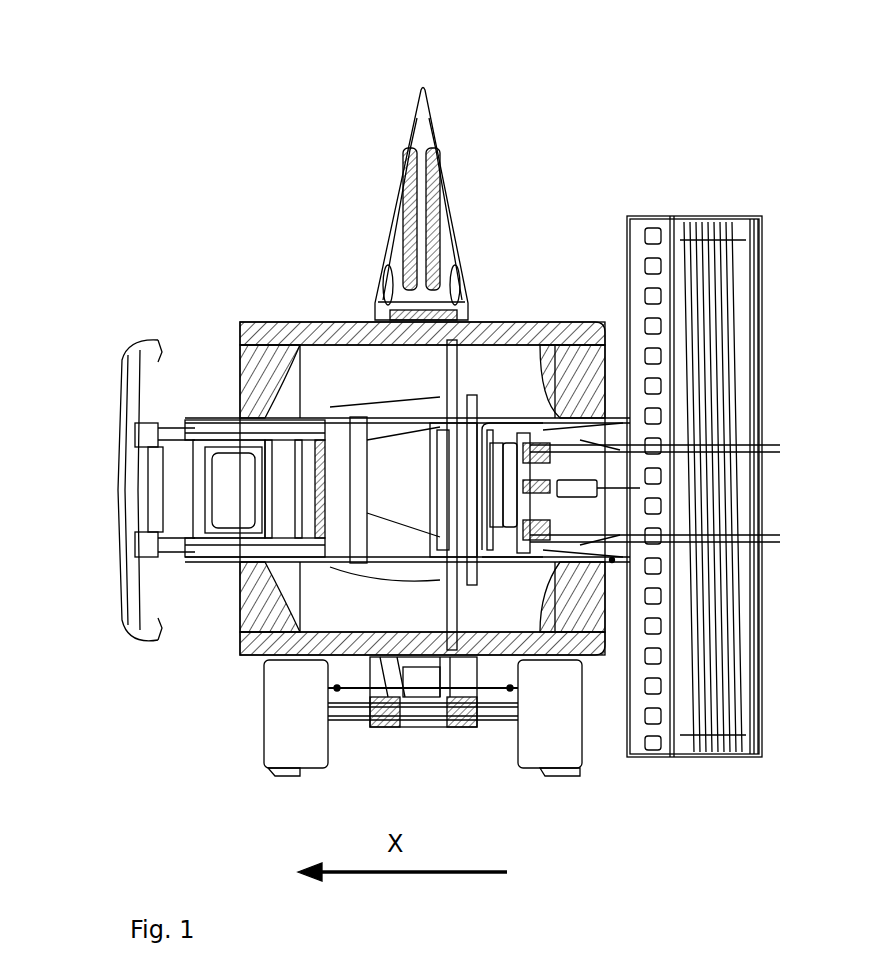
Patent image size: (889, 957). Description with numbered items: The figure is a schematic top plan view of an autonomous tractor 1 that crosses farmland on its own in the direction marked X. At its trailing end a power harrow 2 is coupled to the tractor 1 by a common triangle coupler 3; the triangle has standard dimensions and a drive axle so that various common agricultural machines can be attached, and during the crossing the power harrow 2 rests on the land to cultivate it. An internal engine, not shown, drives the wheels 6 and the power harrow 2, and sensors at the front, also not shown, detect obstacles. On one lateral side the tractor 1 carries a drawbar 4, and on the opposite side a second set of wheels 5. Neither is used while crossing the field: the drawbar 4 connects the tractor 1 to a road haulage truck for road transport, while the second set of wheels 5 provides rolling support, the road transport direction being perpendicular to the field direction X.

The autonomous tractor 1 is at (250, 560).
The power harrow 2 is at (668, 292).
The triangle coupler 3 is at (612, 560).
The drawbar 4 is at (438, 240).
The second set of wheels 5 is at (270, 688).
The wheels 6 is at (245, 337).